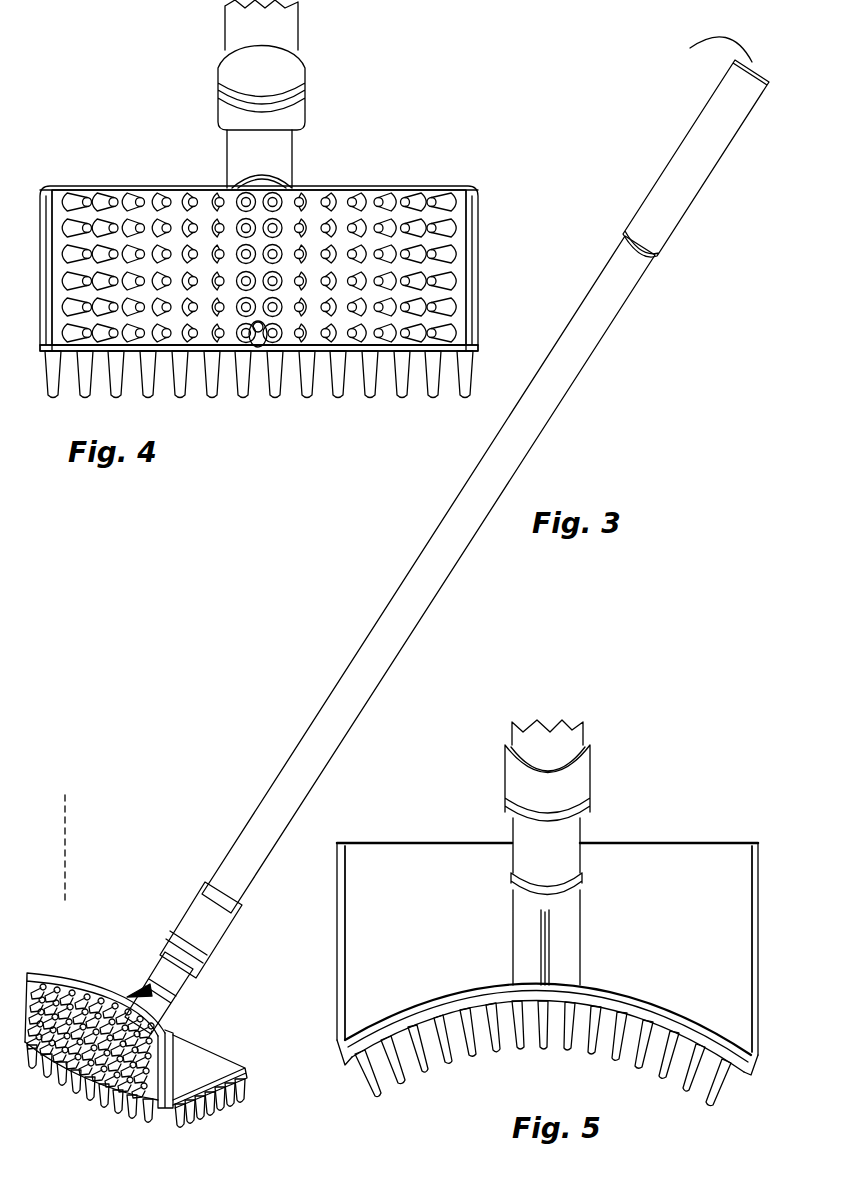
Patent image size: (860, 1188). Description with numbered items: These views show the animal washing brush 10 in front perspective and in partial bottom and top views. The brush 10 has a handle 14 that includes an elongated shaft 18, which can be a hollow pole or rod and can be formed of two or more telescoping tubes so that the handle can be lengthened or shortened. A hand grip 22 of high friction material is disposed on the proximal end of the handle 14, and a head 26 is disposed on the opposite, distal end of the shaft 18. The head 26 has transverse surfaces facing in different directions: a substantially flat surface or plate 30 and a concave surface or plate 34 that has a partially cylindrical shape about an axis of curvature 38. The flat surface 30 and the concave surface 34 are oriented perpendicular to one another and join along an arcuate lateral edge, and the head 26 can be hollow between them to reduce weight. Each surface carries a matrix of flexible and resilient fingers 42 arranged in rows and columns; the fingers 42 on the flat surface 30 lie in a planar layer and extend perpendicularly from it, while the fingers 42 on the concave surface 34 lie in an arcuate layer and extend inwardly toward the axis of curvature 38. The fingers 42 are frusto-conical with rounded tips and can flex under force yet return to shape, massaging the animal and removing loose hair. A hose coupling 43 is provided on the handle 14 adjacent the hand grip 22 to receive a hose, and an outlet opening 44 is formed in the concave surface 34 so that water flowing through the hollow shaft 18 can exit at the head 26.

In FIG. 4, the brush 10 is at (259, 222).
In FIG. 3, the brush 10 is at (395, 584).
In FIG. 5, the brush 10 is at (547, 908).
In FIG. 4, the handle 14 is at (300, 24).
In FIG. 3, the handle 14 is at (424, 549).
In FIG. 5, the handle 14 is at (580, 745).
In FIG. 4, the elongated shaft 18 is at (310, 66).
In FIG. 3, the elongated shaft 18 is at (359, 650).
In FIG. 5, the elongated shaft 18 is at (512, 745).
In FIG. 3, the hand grip 22 is at (677, 180).
In FIG. 4, the head 26 is at (259, 285).
In FIG. 3, the head 26 is at (134, 981).
In FIG. 5, the head 26 is at (547, 939).
In FIG. 4, the substantially flat surface or plate 30 is at (185, 355).
In FIG. 3, the substantially flat surface or plate 30 is at (205, 1075).
In FIG. 5, the substantially flat surface or plate 30 is at (490, 987).
In FIG. 4, the concave surface or plate 34 is at (392, 190).
In FIG. 3, the concave surface or plate 34 is at (68, 978).
In FIG. 5, the concave surface or plate 34 is at (635, 858).
In FIG. 3, the axis of curvature 38 is at (60, 815).
In FIG. 4, the flexible and resilient fingers 42 is at (445, 205).
In FIG. 3, the flexible and resilient fingers 42 is at (38, 974).
In FIG. 5, the flexible and resilient fingers 42 is at (455, 1065).
In FIG. 3, the hose coupling 43 is at (707, 54).
In FIG. 4, the outlet opening 44 is at (264, 336).